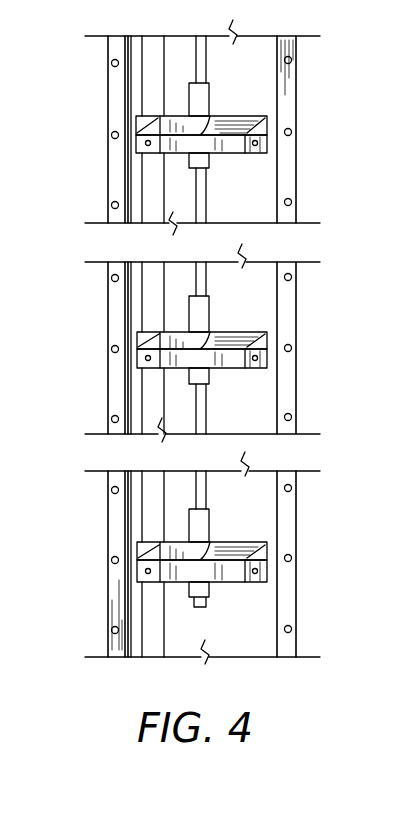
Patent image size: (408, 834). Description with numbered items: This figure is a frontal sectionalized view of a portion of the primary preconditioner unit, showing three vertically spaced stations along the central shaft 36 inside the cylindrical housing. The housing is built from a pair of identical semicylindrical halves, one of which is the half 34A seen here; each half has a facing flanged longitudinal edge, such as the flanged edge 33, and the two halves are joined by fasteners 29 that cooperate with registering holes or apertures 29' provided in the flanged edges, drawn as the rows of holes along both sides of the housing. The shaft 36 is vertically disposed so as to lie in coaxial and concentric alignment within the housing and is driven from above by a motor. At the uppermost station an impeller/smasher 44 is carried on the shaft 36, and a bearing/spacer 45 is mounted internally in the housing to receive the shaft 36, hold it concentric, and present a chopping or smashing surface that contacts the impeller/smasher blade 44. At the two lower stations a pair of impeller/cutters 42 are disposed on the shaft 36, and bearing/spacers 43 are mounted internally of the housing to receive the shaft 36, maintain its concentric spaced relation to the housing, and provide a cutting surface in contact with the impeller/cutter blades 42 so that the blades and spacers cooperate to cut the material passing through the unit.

The flanged longitudinal edge 33 is at (110, 105).
The semicylindrical housing half 34A is at (137, 71).
The fastener 29 is at (223, 454).
The registering hole 29' is at (177, 133).
The shaft 36 is at (206, 60).
The impeller/smasher 44 is at (262, 127).
The bearing/spacer 45 is at (263, 147).
The impeller/cutter 42 is at (262, 338).
The bearing/spacer 43 is at (265, 360).